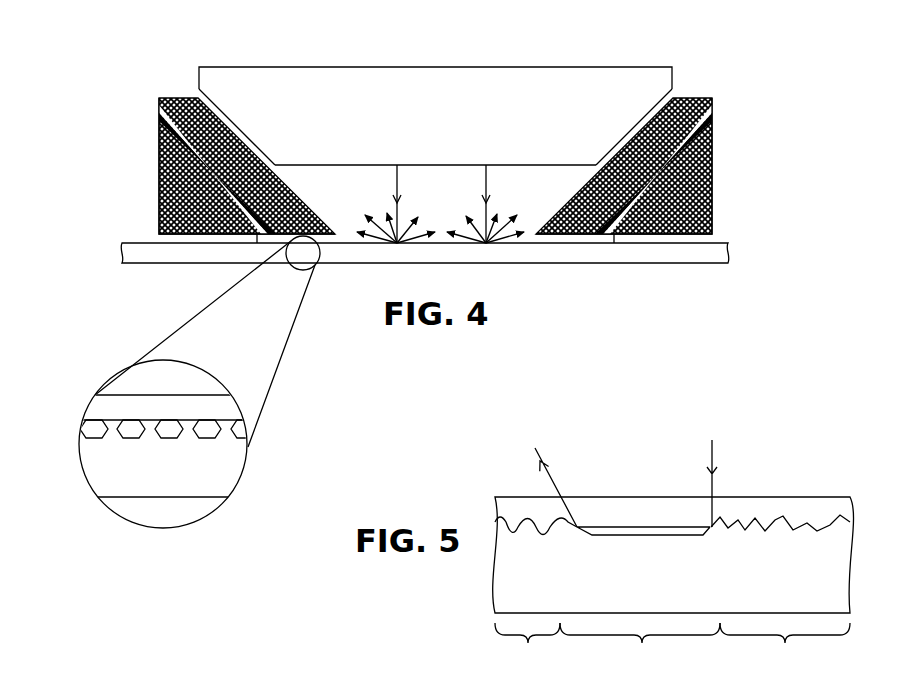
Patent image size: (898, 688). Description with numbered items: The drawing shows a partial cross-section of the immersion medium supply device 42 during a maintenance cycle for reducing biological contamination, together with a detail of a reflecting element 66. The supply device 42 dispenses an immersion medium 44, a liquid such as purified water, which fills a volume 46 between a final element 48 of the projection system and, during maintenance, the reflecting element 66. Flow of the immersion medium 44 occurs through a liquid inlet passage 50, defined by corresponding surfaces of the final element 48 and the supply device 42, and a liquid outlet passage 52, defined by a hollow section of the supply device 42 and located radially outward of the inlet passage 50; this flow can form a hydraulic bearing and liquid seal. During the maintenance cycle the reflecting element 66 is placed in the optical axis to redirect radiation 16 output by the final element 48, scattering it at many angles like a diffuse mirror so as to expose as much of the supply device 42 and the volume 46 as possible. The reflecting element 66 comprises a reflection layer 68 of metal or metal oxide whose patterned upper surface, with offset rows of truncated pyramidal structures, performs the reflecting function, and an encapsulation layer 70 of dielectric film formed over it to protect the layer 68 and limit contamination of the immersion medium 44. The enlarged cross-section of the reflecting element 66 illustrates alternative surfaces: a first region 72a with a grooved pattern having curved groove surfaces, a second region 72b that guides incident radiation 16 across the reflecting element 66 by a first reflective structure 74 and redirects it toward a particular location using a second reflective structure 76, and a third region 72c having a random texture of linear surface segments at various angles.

In FIG. 4, the radiation 16 is at (396, 187).
In FIG. 5, the radiation 16 is at (716, 452).
In FIG. 4, the immersion medium supply device 42 is at (170, 98).
In FIG. 4, the immersion medium 44 is at (525, 205).
In FIG. 4, the volume 46 is at (440, 193).
In FIG. 4, the final element 48 is at (515, 105).
In FIG. 4, the liquid inlet passage 50 is at (213, 106).
In FIG. 4, the liquid outlet passage 52 is at (168, 123).
In FIG. 4, the reflecting element 66 is at (553, 252).
In FIG. 4, the reflection layer 68 is at (90, 449).
In FIG. 5, the reflection layer 68 is at (504, 553).
In FIG. 4, the encapsulation layer 70 is at (103, 411).
In FIG. 5, the encapsulation layer 70 is at (502, 505).
In FIG. 5, the first region 72a is at (527, 647).
In FIG. 5, the second region 72b is at (640, 647).
In FIG. 5, the third region 72c is at (785, 647).
In FIG. 5, the first reflective structure 74 is at (713, 530).
In FIG. 5, the second reflective structure 76 is at (580, 530).